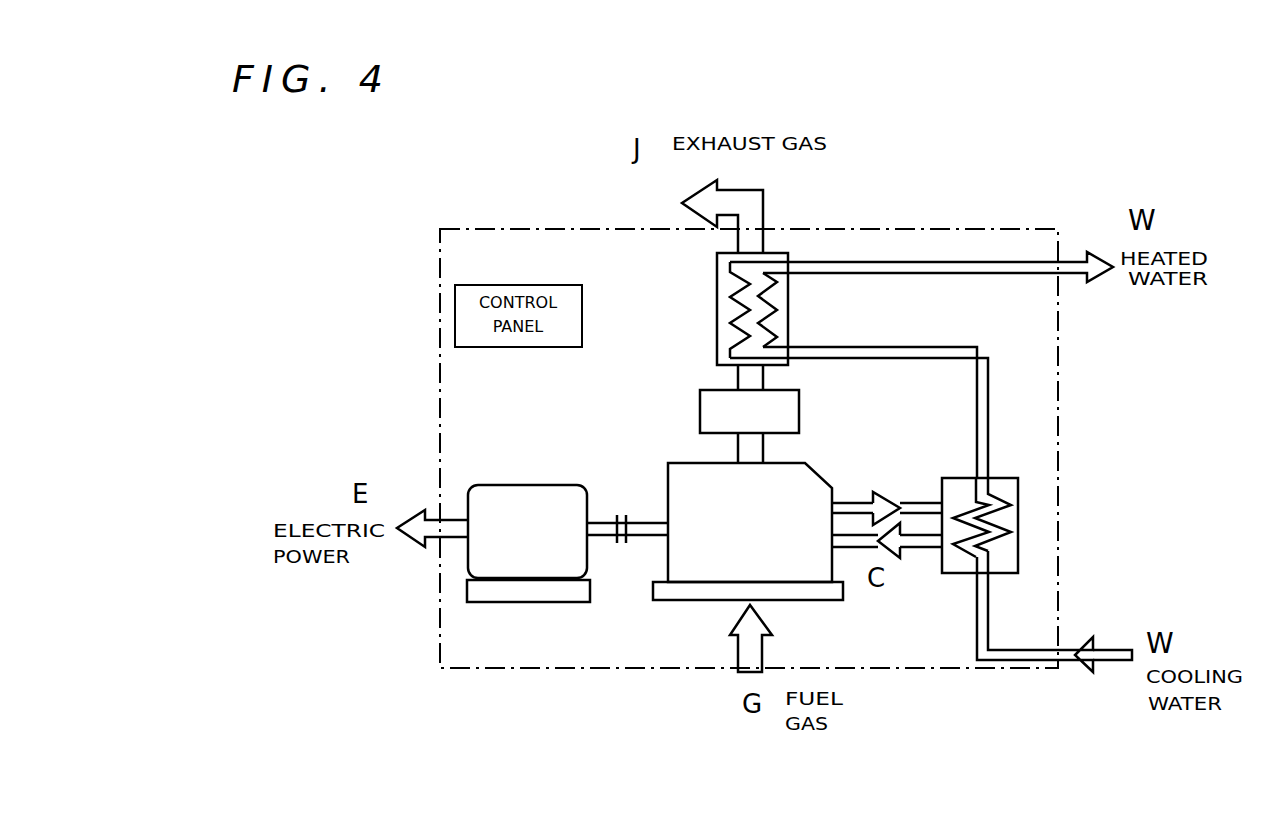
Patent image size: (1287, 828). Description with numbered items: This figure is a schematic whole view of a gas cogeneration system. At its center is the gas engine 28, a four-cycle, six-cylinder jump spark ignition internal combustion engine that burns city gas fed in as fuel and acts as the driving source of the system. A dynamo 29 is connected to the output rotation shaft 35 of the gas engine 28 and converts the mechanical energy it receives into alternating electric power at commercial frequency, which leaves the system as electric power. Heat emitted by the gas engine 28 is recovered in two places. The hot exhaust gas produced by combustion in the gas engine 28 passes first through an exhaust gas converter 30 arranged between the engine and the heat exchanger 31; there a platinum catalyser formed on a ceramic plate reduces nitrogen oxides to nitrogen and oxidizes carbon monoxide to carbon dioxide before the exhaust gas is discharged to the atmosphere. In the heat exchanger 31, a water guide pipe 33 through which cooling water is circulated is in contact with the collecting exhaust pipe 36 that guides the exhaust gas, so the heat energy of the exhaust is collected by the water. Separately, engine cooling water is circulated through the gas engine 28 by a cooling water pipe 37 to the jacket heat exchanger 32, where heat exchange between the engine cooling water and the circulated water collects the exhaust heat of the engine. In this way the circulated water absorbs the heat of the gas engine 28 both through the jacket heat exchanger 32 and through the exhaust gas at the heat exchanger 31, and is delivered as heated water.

The gas engine 28 is at (813, 482).
The dynamo 29 is at (520, 490).
The exhaust gas converter 30 is at (700, 407).
The heat exchanger 31 is at (717, 257).
The jacket heat exchanger 32 is at (1012, 510).
The water guide pipe 33 is at (770, 293).
The output rotation shaft 35 is at (647, 528).
The collecting exhaust pipe 36 is at (747, 380).
The cooling water pipe 37 is at (926, 500).